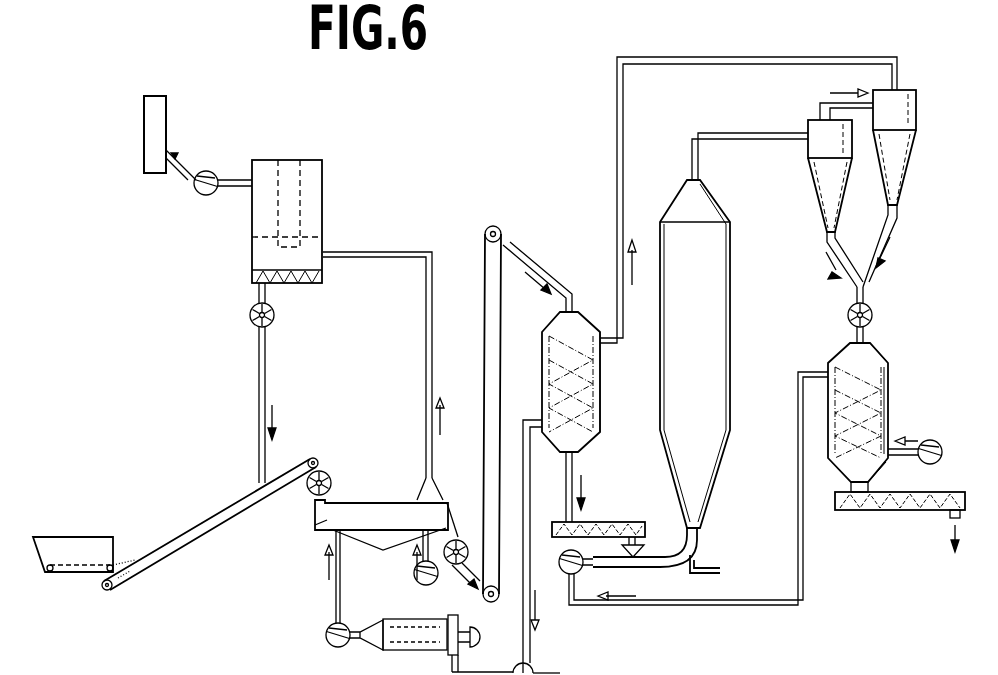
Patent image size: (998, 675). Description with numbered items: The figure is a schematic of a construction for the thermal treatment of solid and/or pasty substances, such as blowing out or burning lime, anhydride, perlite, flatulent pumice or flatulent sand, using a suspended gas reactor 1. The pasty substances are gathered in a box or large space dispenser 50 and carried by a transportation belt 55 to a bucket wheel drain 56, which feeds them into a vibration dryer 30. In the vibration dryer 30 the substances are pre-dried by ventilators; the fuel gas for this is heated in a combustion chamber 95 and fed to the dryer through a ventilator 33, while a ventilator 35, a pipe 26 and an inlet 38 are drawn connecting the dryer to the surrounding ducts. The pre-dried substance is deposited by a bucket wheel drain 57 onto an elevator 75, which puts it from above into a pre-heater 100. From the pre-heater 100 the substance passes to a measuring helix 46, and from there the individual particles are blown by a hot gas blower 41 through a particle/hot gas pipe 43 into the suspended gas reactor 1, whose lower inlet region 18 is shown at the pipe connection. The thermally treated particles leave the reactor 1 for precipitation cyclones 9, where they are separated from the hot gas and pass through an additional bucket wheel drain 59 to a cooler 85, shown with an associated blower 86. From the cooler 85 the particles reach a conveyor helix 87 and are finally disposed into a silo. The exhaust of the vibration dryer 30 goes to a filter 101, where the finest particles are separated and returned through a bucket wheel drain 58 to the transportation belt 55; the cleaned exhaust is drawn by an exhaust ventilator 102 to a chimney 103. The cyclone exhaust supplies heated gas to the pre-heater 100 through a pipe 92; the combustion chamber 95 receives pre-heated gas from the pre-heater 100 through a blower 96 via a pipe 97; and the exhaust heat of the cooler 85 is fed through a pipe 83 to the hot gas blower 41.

The suspended gas reactor 1 is at (728, 330).
The precipitation cyclones 9 is at (888, 191).
The fuel inlet 18 is at (700, 560).
The pipe 26 is at (413, 254).
The vibration dryer 30 is at (326, 531).
The ventilator 33 is at (328, 635).
The pump 35 is at (414, 573).
The inlet funnel 38 is at (435, 490).
The hot gas blower 41 is at (559, 565).
The particle/hot gas pipe 43 is at (648, 567).
The measuring helix 46 is at (627, 523).
The large space dispenser 50 is at (92, 548).
The transportation belt 55 is at (201, 531).
The bucket wheel drain 56 is at (327, 474).
The bucket wheel drain 57 is at (466, 539).
The bucket wheel drain 58 is at (272, 322).
The bucket wheel drain 59 is at (871, 308).
The elevator 75 is at (485, 366).
The pipe 83 is at (740, 605).
The cooler 85 is at (880, 400).
The pump 86 is at (935, 444).
The conveyor helix 87 is at (957, 492).
The pipe 92 is at (617, 135).
The combustion chamber 95 is at (412, 640).
The blower 96 is at (541, 670).
The pipe 97 is at (526, 506).
The pre-heater 100 is at (592, 400).
The filter 101 is at (312, 170).
The exhaust ventilator 102 is at (208, 172).
The chimney 103 is at (150, 139).